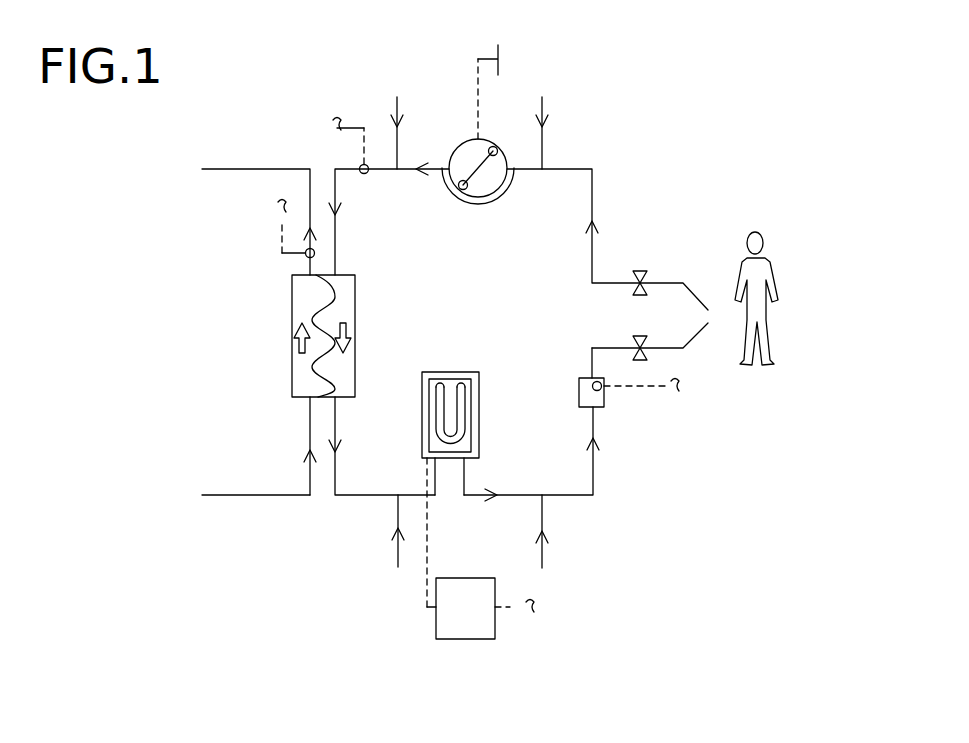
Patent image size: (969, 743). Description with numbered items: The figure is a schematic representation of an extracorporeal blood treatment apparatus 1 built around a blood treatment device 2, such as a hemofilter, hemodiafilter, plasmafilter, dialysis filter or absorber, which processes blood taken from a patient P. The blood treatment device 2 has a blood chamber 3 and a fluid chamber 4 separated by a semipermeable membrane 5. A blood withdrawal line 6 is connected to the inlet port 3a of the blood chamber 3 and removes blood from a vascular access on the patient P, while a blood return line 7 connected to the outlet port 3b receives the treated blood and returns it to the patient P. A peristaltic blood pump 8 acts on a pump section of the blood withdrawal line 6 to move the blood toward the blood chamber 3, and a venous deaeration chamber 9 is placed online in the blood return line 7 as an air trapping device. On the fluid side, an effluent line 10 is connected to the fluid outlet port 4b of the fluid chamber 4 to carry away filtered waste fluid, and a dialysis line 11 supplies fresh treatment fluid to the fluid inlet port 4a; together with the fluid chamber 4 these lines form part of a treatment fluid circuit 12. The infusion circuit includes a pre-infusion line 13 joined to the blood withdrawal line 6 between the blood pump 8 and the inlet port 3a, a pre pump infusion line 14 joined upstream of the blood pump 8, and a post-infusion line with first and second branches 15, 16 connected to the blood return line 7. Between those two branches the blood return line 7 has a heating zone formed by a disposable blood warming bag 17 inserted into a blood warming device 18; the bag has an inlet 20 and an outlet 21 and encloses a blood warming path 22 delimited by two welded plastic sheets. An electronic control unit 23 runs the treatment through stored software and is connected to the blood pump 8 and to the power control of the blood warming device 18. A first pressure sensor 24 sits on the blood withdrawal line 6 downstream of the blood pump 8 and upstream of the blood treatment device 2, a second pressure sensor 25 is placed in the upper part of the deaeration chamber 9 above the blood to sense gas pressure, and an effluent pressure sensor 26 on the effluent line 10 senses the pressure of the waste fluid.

The extracorporeal blood treatment apparatus 1 is at (690, 180).
The blood treatment device 2 is at (280, 307).
The blood chamber 3 is at (347, 317).
The inlet port 3a is at (337, 273).
The outlet port 3b is at (337, 400).
The fluid chamber 4 is at (302, 365).
The fluid inlet port 4a is at (308, 400).
The fluid outlet port 4b is at (305, 276).
The semipermeable membrane 5 is at (325, 297).
The blood withdrawal line 6 is at (562, 168).
The blood return line 7 is at (583, 496).
The blood pump 8 is at (474, 140).
The venous deaeration chamber 9 is at (605, 393).
The effluent line 10 is at (268, 169).
The dialysis line 11 is at (258, 496).
The treatment fluid circuit 12 is at (178, 171).
The pre-infusion line 13 is at (397, 110).
The pre pump infusion line 14 is at (542, 110).
The first branch of post-infusion line 15 is at (542, 550).
The second branch of post-infusion line 16 is at (398, 552).
The blood warming bag 17 is at (472, 388).
The blood warming device 18 is at (462, 370).
The inlet 20 is at (438, 459).
The outlet 21 is at (465, 462).
The blood warming path 22 is at (447, 411).
The electronic control unit 23 is at (495, 630).
The first pressure sensor 24 is at (362, 166).
The second pressure sensor 25 is at (603, 393).
The effluent pressure sensor 26 is at (305, 258).
The patient P is at (782, 276).